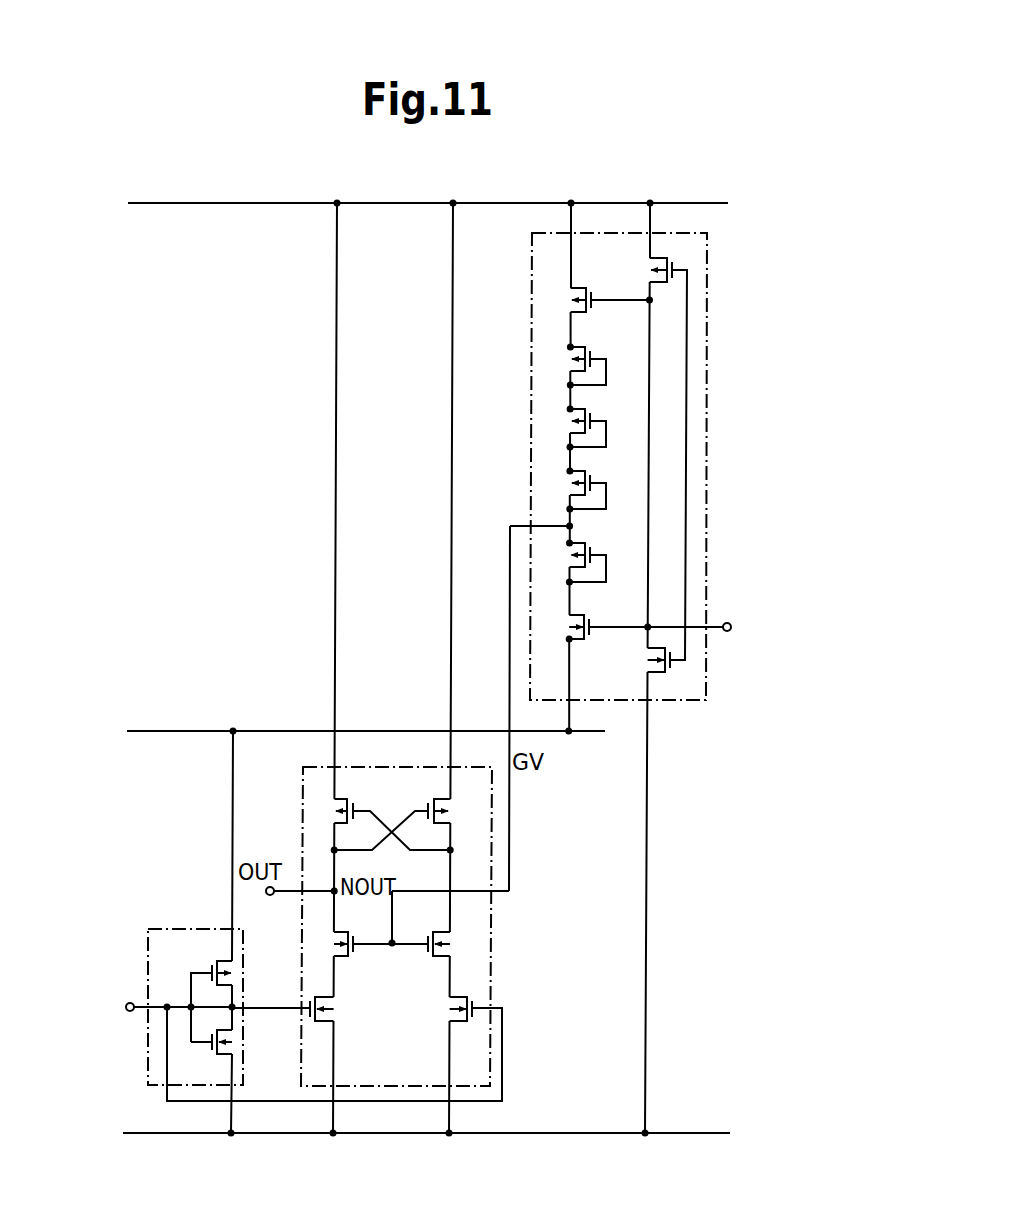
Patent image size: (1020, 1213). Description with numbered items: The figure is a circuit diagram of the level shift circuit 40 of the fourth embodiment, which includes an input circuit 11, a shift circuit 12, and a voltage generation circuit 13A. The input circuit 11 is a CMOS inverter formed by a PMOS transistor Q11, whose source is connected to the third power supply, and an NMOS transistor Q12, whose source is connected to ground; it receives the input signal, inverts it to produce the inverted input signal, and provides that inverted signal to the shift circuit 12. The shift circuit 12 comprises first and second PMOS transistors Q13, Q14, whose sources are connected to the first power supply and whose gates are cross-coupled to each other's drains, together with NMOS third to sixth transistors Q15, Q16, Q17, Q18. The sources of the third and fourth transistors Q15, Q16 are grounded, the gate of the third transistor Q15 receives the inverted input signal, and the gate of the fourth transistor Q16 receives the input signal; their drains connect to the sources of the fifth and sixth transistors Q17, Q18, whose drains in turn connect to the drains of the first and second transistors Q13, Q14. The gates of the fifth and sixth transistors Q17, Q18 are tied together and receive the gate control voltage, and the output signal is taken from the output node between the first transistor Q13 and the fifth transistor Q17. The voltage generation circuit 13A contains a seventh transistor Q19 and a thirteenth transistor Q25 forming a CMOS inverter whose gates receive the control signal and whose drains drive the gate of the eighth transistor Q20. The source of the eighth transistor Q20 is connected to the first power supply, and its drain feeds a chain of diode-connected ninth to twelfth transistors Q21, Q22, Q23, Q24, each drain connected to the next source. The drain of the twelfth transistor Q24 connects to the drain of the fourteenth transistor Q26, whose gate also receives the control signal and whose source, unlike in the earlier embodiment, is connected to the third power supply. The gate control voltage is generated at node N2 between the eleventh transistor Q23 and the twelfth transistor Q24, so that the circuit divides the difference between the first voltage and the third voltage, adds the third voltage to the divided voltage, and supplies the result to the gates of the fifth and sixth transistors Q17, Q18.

The level shift circuit 40 is at (726, 190).
The input circuit 11 is at (210, 929).
The shift circuit 12 is at (497, 927).
The voltage generation circuit 13A is at (532, 277).
The node N2 is at (582, 527).
The PMOS transistor Q11 is at (212, 964).
The NMOS transistor Q12 is at (212, 1048).
The first transistor Q13 is at (364, 790).
The second transistor Q14 is at (428, 803).
The third transistor Q15 is at (308, 1013).
The fourth transistor Q16 is at (474, 1001).
The fifth transistor Q17 is at (355, 957).
The sixth transistor Q18 is at (427, 957).
The seventh transistor Q19 is at (674, 262).
The eighth transistor Q20 is at (592, 299).
The ninth transistor Q21 is at (601, 346).
The tenth transistor Q22 is at (591, 418).
The eleventh transistor Q23 is at (591, 480).
The twelfth transistor Q24 is at (591, 550).
The thirteenth transistor Q25 is at (671, 668).
The fourteenth transistor Q26 is at (592, 623).